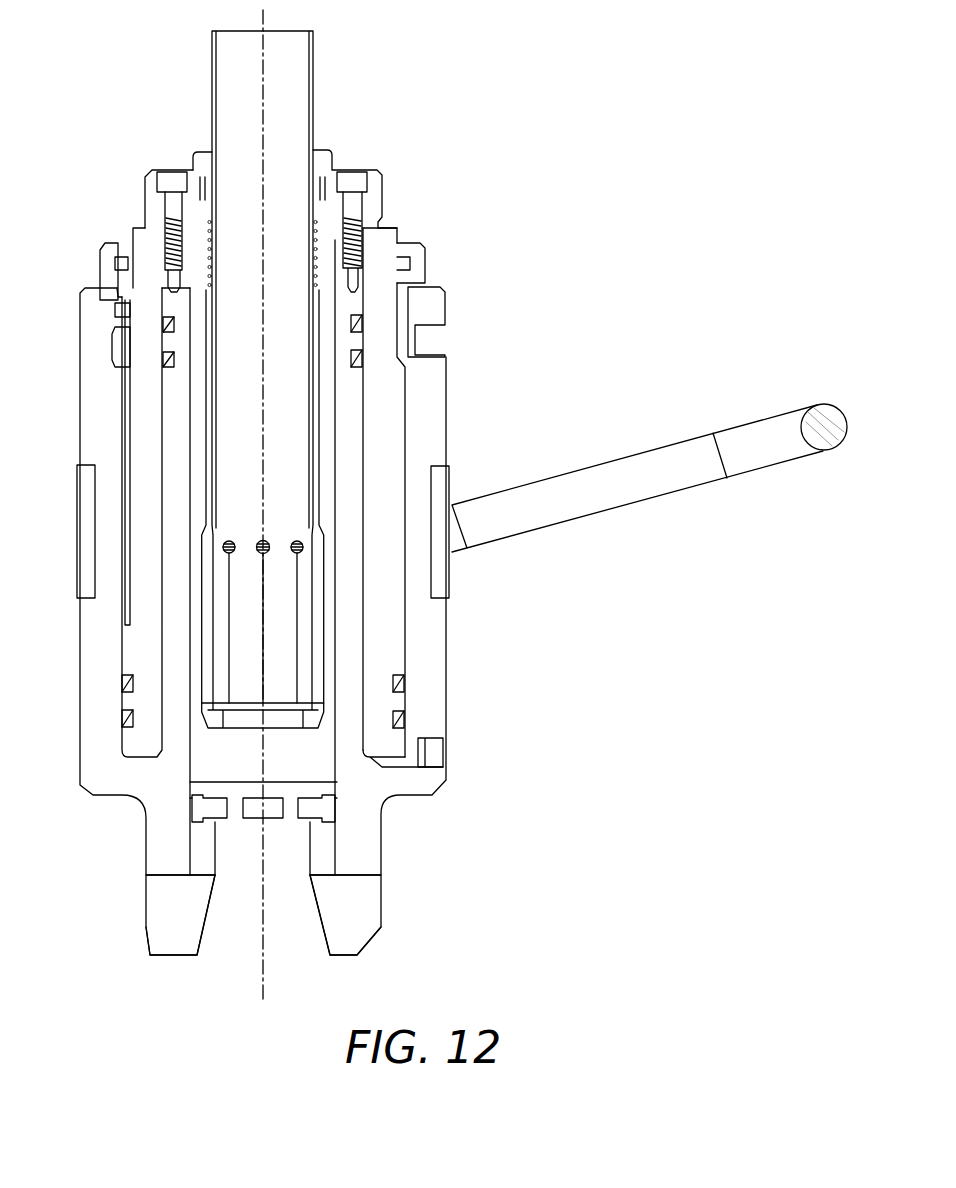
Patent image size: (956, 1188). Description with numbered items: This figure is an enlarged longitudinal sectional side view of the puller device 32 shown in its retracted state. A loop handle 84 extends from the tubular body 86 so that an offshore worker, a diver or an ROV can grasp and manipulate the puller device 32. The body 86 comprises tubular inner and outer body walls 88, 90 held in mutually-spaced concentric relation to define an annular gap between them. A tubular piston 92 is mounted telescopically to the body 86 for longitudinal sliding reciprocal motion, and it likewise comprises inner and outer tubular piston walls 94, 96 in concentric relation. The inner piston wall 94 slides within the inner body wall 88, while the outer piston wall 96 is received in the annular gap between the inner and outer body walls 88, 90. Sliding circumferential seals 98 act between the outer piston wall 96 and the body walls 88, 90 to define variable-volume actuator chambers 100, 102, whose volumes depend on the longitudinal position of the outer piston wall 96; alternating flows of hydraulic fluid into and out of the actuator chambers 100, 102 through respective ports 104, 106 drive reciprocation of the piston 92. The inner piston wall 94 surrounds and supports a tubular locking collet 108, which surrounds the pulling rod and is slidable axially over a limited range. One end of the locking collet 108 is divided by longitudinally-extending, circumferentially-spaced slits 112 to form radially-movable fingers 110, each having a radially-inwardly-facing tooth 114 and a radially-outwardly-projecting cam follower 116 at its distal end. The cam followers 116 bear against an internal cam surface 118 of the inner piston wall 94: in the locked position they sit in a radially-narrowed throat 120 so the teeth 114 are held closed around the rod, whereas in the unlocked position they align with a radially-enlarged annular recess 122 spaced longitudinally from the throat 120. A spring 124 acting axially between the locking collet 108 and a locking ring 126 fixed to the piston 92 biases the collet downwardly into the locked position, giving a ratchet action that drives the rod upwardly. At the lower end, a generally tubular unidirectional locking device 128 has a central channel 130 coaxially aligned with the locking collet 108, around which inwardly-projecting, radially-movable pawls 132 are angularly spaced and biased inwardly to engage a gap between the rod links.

The puller device 32 is at (507, 123).
The loop handle 84 is at (752, 430).
The tubular body 86 is at (503, 386).
The inner body wall 88 is at (172, 695).
The outer body wall 90 is at (88, 740).
The tubular piston 92 is at (108, 202).
The inner piston wall 94 is at (197, 403).
The outer piston wall 96 is at (142, 450).
The sliding circumferential seals 98 is at (163, 360).
The actuator chamber 100 is at (402, 417).
The actuator chamber 102 is at (388, 743).
The port 104 is at (435, 338).
The port 106 is at (437, 752).
The locking collet 108 is at (308, 50).
The fingers 110 is at (277, 667).
The slits 112 is at (250, 610).
The tooth 114 is at (293, 730).
The cam follower 116 is at (80, 783).
The internal cam surface 118 is at (330, 650).
The throat 120 is at (317, 710).
The annular recess 122 is at (318, 602).
The spring 124 is at (318, 230).
The locking ring 126 is at (200, 153).
The unidirectional locking device 128 is at (131, 934).
The central channel 130 is at (237, 855).
The pawls 132 is at (308, 810).